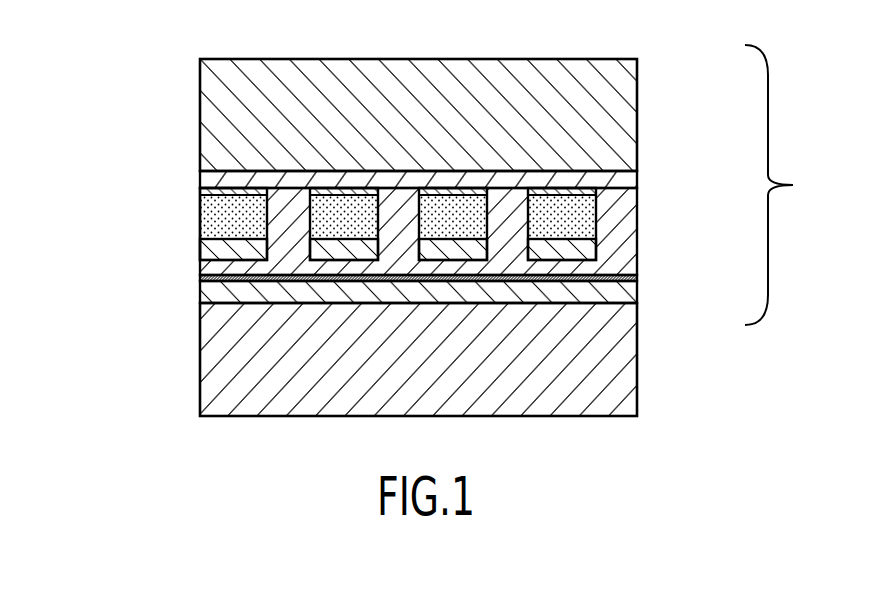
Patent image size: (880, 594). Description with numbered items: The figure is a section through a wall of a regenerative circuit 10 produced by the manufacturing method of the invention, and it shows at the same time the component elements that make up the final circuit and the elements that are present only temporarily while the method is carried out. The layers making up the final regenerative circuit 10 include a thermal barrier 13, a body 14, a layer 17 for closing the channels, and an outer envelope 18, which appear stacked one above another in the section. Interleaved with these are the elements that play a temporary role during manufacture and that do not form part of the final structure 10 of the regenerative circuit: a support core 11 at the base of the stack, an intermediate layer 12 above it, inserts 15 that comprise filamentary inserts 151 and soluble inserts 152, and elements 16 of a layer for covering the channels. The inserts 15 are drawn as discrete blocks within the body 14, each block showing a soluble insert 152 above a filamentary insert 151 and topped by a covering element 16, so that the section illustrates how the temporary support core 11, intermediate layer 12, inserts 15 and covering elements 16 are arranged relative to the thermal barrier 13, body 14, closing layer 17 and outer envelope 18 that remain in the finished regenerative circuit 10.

The regenerative circuit 10 is at (783, 185).
The support core 11 is at (242, 386).
The intermediate layer 12 is at (210, 297).
The thermal barrier 13 is at (637, 277).
The body 14 is at (630, 253).
The inserts 15 is at (200, 222).
The filamentary inserts 151 is at (200, 252).
The soluble inserts 152 is at (200, 212).
The elements of a layer for covering the channels 16 is at (200, 195).
The layer for closing the channels 17 is at (630, 177).
The outer envelope 18 is at (605, 99).